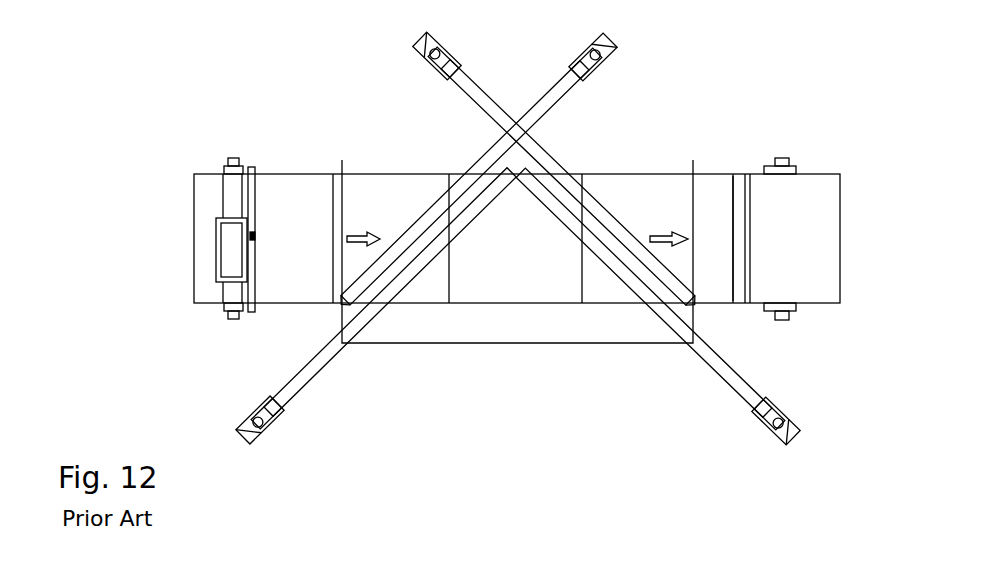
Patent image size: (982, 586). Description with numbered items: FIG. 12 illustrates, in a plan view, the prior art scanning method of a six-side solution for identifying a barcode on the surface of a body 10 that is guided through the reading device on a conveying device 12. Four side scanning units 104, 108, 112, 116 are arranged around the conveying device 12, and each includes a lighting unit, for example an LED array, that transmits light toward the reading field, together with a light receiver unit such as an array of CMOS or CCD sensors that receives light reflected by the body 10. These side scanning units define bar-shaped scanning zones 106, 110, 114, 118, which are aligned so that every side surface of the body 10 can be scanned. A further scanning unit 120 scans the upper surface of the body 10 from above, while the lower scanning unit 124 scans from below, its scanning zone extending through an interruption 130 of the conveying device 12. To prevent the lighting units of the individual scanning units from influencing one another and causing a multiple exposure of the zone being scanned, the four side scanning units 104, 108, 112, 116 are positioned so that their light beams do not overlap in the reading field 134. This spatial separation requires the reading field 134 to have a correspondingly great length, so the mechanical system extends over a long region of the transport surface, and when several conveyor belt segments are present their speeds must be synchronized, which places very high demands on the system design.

The body 10 is at (510, 275).
The conveying device 12 is at (797, 226).
The scanning unit 104 is at (262, 428).
The scanning zone 106 is at (302, 378).
The scanning unit 108 is at (598, 36).
The scanning zone 110 is at (543, 103).
The scanning unit 112 is at (780, 408).
The scanning zone 114 is at (723, 373).
The scanning unit 116 is at (413, 48).
The scanning zone 118 is at (470, 101).
The scanning unit 120 is at (213, 187).
The scanning unit 124 is at (778, 162).
The interruption 130 is at (733, 175).
The reading field 134 is at (437, 337).